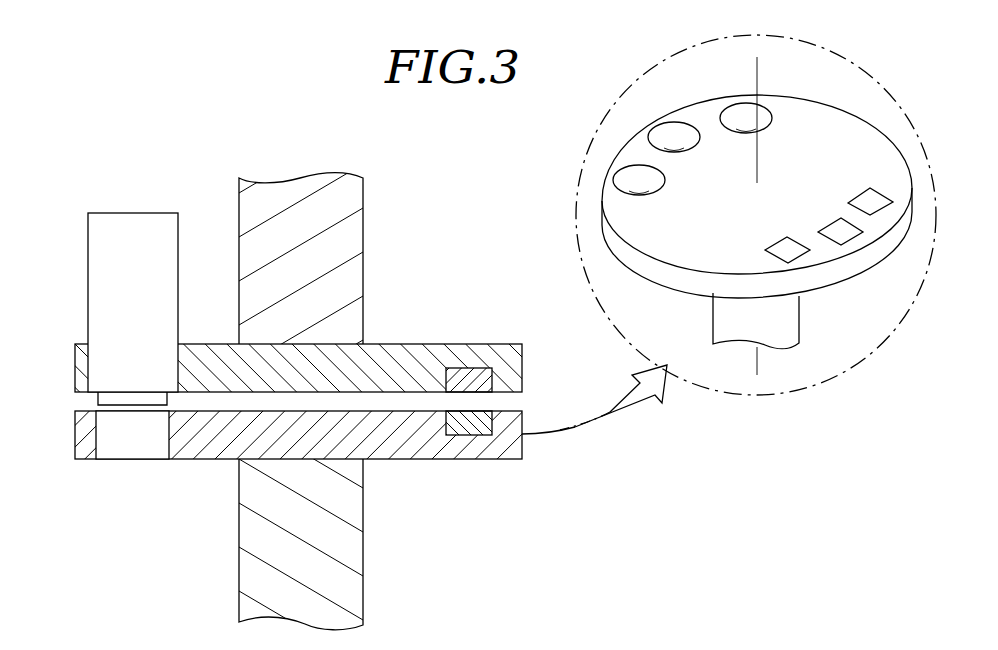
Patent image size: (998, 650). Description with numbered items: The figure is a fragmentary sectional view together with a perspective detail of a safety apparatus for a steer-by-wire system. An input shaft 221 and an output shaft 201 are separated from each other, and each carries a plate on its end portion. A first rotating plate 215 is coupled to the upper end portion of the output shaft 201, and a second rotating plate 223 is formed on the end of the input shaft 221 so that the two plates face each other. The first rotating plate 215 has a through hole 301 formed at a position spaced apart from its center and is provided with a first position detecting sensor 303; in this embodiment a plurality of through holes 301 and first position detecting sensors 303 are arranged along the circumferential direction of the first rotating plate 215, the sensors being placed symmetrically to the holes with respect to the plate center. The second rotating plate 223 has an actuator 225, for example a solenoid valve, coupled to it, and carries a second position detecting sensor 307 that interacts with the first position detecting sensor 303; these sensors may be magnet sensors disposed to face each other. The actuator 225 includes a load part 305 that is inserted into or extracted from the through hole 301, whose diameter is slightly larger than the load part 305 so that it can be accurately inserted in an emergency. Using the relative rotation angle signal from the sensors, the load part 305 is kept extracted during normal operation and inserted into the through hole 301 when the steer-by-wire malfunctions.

The output shaft 201 is at (357, 593).
The first rotating plate 215 is at (398, 459).
The input shaft 221 is at (358, 236).
The second rotating plate 223 is at (413, 344).
The actuator 225 is at (135, 218).
The through hole 301 is at (127, 453).
The first position detecting sensor 303 is at (467, 435).
The load part 305 is at (100, 400).
The second position detecting sensor 307 is at (467, 372).